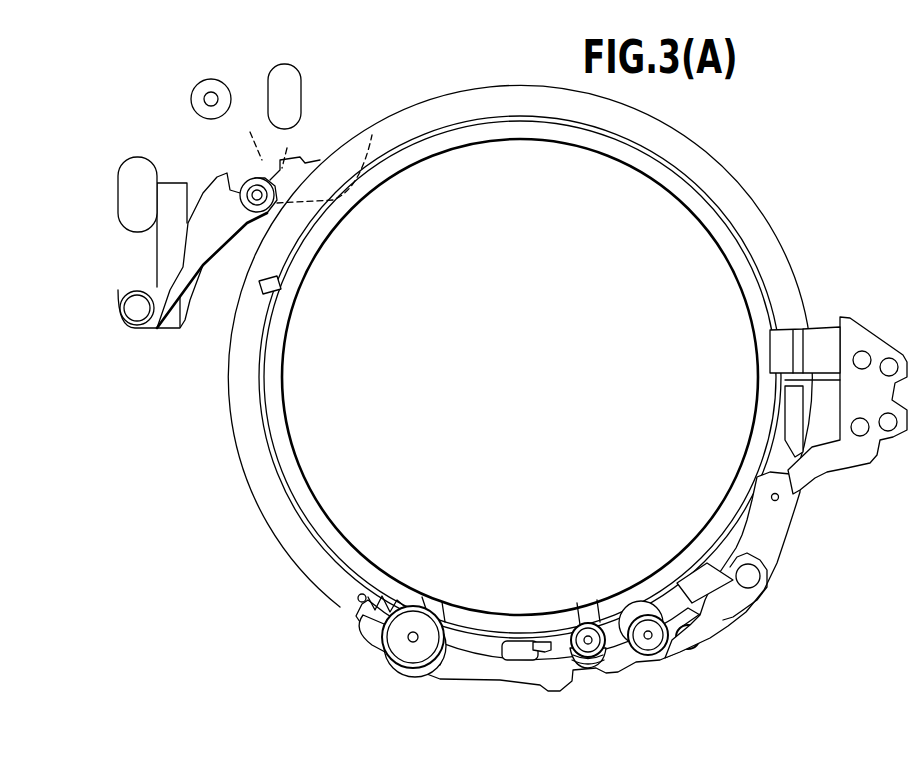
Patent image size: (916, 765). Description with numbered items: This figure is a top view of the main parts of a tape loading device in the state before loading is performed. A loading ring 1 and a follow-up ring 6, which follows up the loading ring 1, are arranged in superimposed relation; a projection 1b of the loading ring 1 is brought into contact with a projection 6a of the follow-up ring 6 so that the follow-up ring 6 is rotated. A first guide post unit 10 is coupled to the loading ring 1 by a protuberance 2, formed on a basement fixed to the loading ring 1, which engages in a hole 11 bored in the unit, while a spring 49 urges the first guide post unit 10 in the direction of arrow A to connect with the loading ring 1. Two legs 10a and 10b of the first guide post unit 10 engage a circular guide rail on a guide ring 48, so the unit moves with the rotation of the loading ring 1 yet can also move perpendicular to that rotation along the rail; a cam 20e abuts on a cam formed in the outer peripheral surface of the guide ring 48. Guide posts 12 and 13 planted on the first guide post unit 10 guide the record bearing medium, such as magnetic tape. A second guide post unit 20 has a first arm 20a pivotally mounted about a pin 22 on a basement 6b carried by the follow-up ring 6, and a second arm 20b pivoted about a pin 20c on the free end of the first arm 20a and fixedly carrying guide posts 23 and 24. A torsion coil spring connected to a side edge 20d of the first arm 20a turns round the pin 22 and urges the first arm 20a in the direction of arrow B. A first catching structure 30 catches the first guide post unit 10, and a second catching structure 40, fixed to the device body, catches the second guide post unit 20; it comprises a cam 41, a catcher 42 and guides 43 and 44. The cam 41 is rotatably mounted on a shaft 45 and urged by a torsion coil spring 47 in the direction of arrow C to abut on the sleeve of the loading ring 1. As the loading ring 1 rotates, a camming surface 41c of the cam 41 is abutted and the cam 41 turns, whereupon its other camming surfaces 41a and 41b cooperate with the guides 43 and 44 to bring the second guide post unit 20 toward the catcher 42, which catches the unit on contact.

The loading ring 1 is at (520, 361).
The projection 1b is at (415, 592).
The protuberance 2 is at (540, 662).
The follow-up ring 6 is at (560, 124).
The projection 6a is at (282, 299).
The basement 6b is at (752, 508).
The first guide post unit 10 is at (539, 646).
The leg 10a is at (589, 608).
The leg 10b is at (458, 602).
The hole 11 is at (520, 648).
The guide post 12 is at (402, 660).
The guide post 13 is at (588, 662).
The second guide post unit 20 is at (746, 577).
The first arm 20a is at (768, 556).
The second arm 20b is at (732, 626).
The pin 20c is at (752, 577).
The side edge 20d is at (792, 523).
The cam 20e is at (660, 578).
The pin 22 is at (780, 497).
The guide post 23 is at (650, 652).
The guide post 24 is at (695, 646).
The first catching structure 30 is at (880, 352).
The second catching structure 40 is at (241, 183).
The cam 41 is at (251, 231).
The camming surface 41a is at (194, 268).
The camming surface 41b is at (170, 247).
The camming surface 41c is at (362, 206).
The catcher 42 is at (213, 79).
The guide 43 is at (122, 196).
The guide 44 is at (300, 80).
The shaft 45 is at (252, 190).
The torsion coil spring 47 is at (261, 140).
The guide ring 48 is at (304, 262).
The spring 49 is at (378, 594).
The arrow A is at (254, 552).
The arrow B is at (759, 616).
The arrow C is at (348, 118).